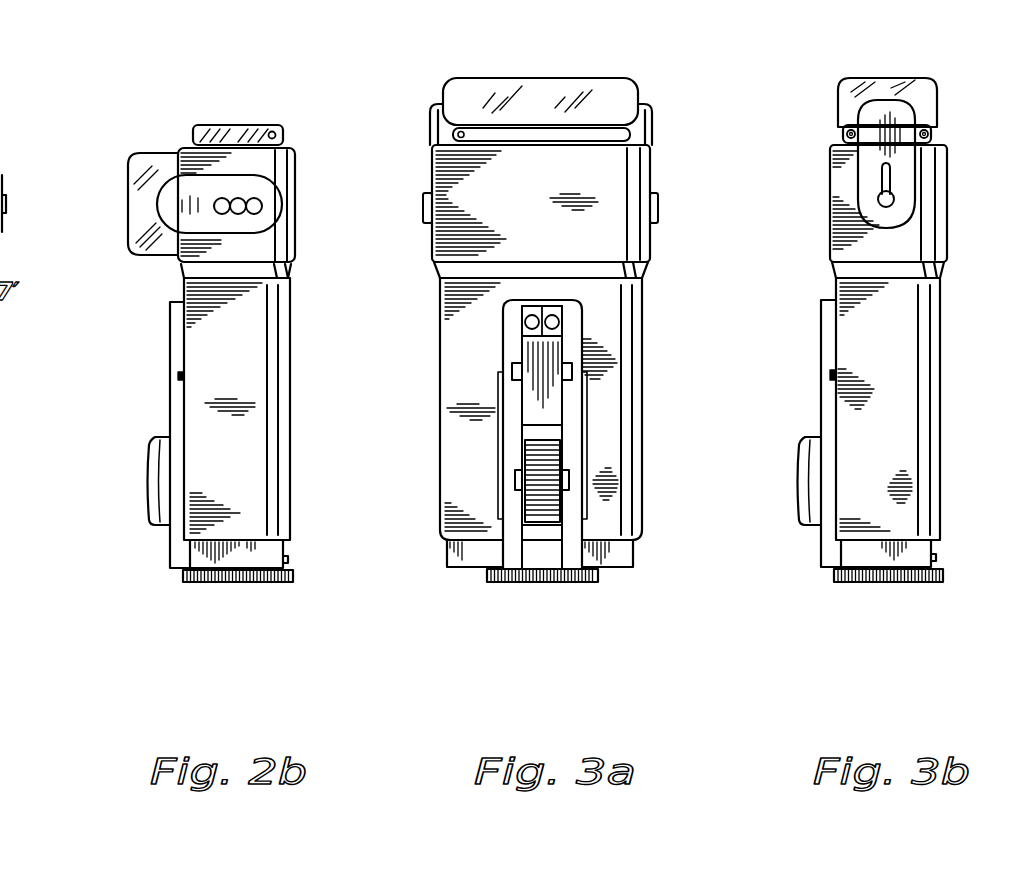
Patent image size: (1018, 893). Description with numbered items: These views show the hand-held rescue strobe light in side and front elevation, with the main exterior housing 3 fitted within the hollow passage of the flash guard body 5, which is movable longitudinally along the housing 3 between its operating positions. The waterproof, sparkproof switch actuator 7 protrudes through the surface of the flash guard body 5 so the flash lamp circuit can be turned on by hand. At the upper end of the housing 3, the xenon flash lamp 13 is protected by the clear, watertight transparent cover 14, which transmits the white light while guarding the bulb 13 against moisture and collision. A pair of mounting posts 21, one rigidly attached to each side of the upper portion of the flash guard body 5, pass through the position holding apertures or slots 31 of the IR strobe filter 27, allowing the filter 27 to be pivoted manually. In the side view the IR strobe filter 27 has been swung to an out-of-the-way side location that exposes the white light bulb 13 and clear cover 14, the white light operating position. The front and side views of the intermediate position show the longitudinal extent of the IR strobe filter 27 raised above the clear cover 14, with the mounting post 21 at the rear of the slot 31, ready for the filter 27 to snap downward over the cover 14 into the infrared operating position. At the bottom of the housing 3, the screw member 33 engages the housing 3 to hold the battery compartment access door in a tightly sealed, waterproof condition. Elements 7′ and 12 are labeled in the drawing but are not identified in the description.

In FIG. 2b, the main exterior housing 3 is at (243, 556).
In FIG. 2b, the flash guard body 5 is at (187, 517).
In FIG. 2b, the switch actuator 7 is at (152, 470).
In FIG. 3a, the release slide 7′ is at (552, 322).
In FIG. 2b, the side plate latch 12 is at (182, 376).
In FIG. 2b, the flash lamp 13 is at (230, 138).
In FIG. 3a, the flash lamp 13 is at (648, 112).
In FIG. 3b, the flash lamp 13 is at (931, 128).
In FIG. 2b, the clear transparent cover 14 is at (250, 122).
In FIG. 3b, the clear transparent cover 14 is at (936, 137).
In FIG. 3a, the mounting post 21 is at (423, 202).
In FIG. 3b, the mounting post 21 is at (884, 194).
In FIG. 2b, the IR strobe filter 27 is at (138, 180).
In FIG. 3a, the IR strobe filter 27 is at (478, 98).
In FIG. 3b, the IR strobe filter 27 is at (860, 88).
In FIG. 3b, the position holding aperture 31 is at (886, 176).
In FIG. 2b, the screw member 33 is at (213, 583).